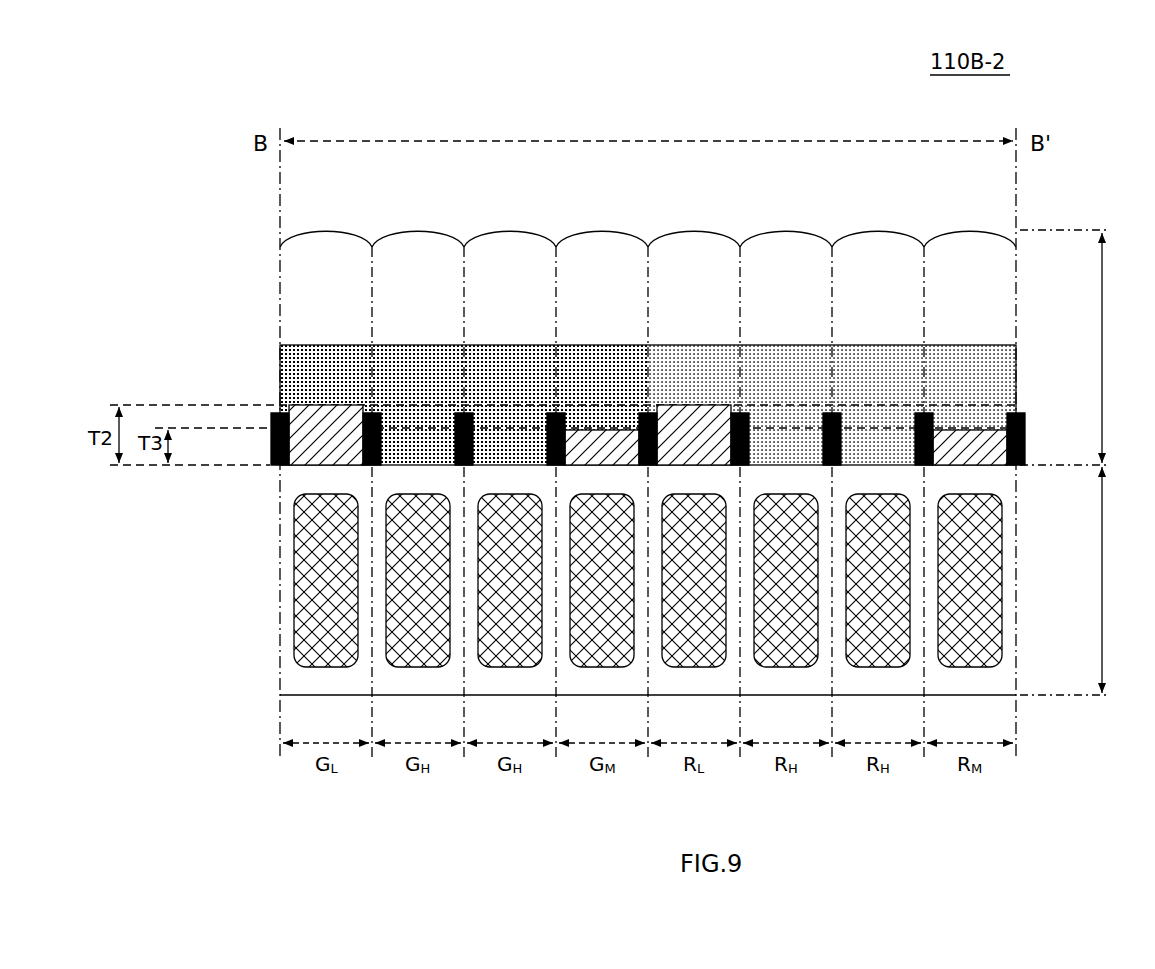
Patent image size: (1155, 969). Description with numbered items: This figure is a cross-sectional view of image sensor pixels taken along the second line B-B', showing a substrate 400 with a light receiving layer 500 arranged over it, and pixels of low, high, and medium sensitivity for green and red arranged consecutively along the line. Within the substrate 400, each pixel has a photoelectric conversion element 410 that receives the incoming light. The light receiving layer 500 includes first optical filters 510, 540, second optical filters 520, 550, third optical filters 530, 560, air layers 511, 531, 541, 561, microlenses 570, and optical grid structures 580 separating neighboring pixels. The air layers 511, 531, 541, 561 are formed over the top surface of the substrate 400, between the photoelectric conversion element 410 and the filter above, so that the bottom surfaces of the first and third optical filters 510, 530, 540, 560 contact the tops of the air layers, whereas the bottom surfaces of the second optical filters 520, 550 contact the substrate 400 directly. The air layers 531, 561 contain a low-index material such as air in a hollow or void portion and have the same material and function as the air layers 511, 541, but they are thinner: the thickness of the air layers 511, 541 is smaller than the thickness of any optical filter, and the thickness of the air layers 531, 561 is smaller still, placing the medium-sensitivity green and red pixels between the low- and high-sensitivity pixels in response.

The microlens 570 is at (324, 246).
The second optical filter 520 is at (412, 356).
The third optical filter 530 is at (573, 355).
The air layer 531 is at (604, 440).
The first optical filter 540 is at (668, 356).
The air layer 541 is at (697, 415).
The second optical filter 550 is at (777, 357).
The third optical filter 560 is at (943, 357).
The air layer 561 is at (973, 440).
The first optical filter 510 is at (295, 356).
The air layer 511 is at (315, 412).
The optical grid structure 580 is at (270, 448).
The photoelectric conversion element 410 is at (995, 553).
The light receiving layer 500 is at (1128, 348).
The substrate 400 is at (1128, 580).